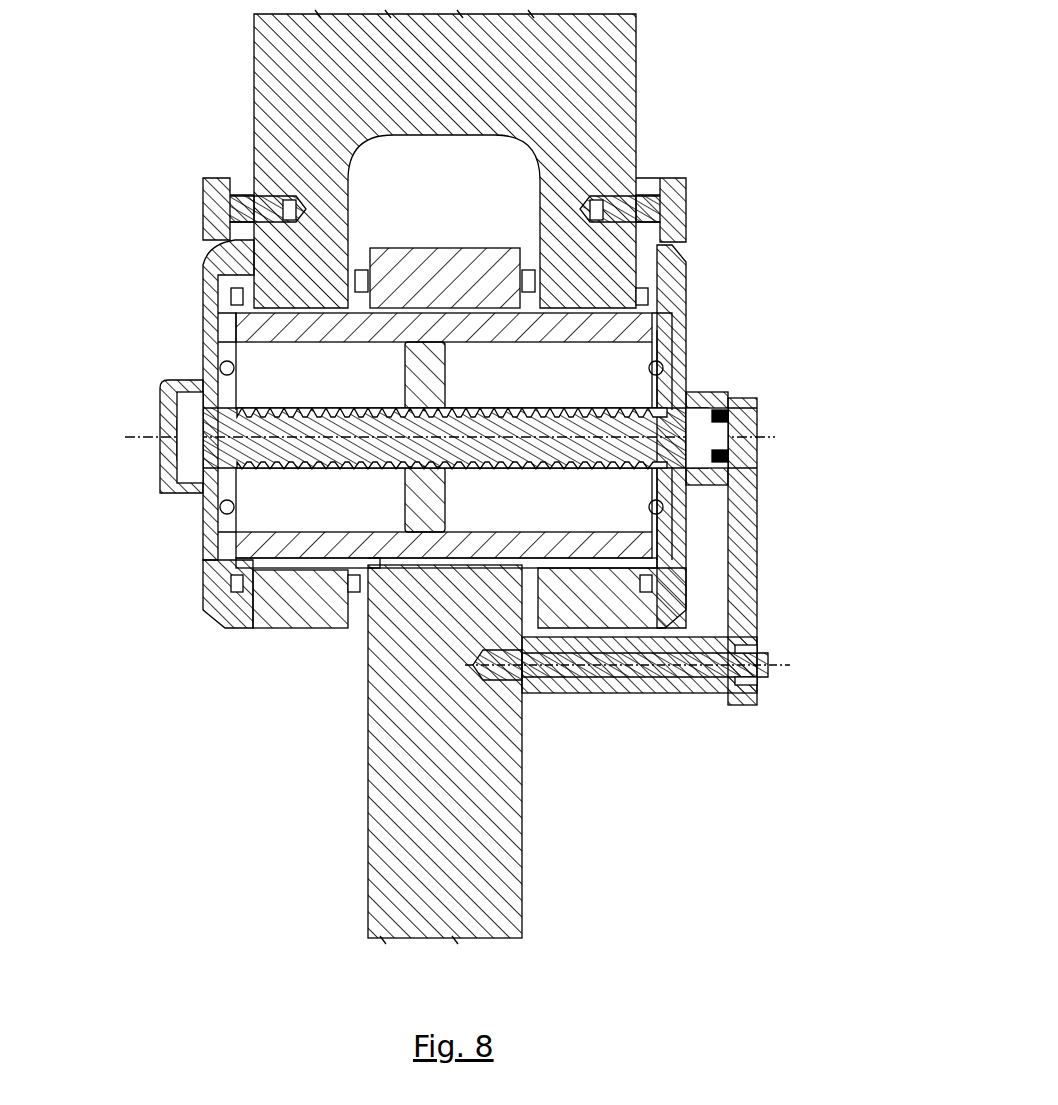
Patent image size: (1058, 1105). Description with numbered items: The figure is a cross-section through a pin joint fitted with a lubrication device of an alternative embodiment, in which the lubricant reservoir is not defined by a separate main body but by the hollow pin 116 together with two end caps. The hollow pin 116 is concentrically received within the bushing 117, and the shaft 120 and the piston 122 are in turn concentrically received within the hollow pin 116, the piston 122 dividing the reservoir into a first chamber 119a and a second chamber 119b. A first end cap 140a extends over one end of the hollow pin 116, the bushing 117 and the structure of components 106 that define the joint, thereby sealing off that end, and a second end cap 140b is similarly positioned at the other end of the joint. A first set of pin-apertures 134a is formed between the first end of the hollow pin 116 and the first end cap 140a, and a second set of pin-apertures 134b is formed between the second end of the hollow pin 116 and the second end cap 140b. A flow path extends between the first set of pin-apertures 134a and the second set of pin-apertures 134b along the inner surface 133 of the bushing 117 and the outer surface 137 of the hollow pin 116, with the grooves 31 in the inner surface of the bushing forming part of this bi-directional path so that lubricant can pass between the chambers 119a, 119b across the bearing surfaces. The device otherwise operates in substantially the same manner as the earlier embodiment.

The structure of components 106 is at (598, 123).
The hollow pin 116 is at (590, 327).
The bushing 117 is at (337, 313).
The first chamber 119a is at (280, 505).
The second chamber 119b is at (632, 387).
The shaft 120 is at (297, 437).
The piston 122 is at (417, 387).
The inner surface of the bushing 133 is at (355, 550).
The outer surface of the hollow pin 137 is at (373, 560).
The first set of pin-apertures 134a is at (660, 507).
The second set of pin-apertures 134b is at (225, 510).
The first end cap 140a is at (667, 281).
The second end cap 140b is at (162, 385).
The grooves 31 is at (490, 565).